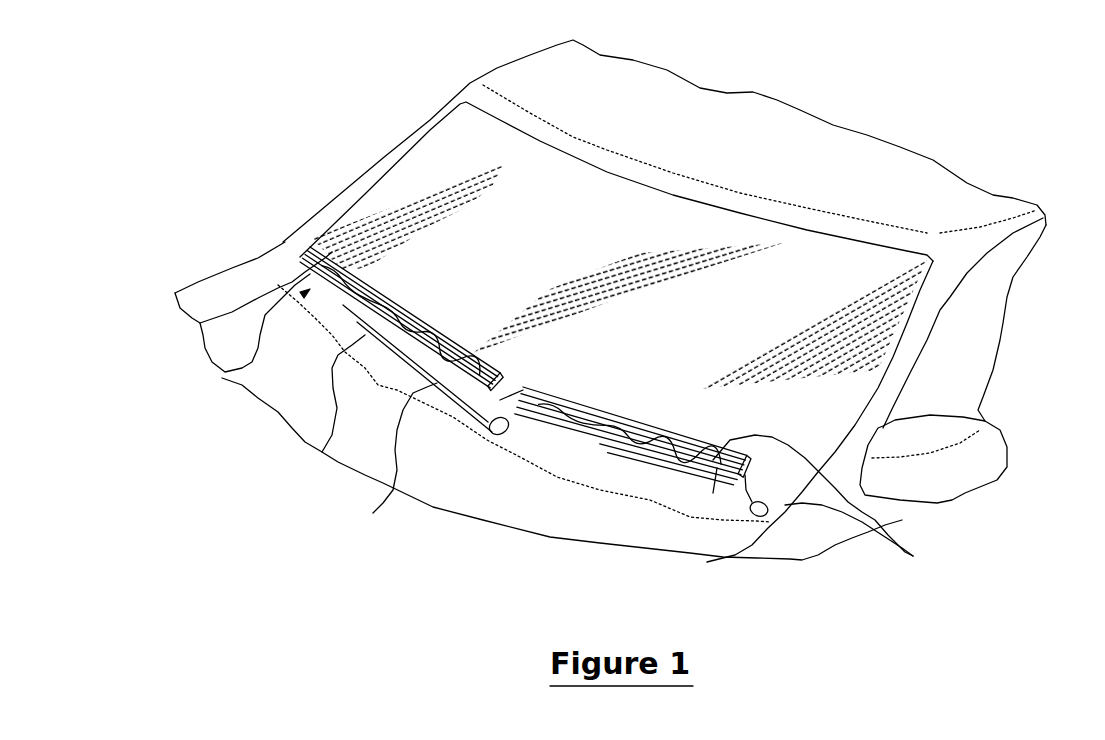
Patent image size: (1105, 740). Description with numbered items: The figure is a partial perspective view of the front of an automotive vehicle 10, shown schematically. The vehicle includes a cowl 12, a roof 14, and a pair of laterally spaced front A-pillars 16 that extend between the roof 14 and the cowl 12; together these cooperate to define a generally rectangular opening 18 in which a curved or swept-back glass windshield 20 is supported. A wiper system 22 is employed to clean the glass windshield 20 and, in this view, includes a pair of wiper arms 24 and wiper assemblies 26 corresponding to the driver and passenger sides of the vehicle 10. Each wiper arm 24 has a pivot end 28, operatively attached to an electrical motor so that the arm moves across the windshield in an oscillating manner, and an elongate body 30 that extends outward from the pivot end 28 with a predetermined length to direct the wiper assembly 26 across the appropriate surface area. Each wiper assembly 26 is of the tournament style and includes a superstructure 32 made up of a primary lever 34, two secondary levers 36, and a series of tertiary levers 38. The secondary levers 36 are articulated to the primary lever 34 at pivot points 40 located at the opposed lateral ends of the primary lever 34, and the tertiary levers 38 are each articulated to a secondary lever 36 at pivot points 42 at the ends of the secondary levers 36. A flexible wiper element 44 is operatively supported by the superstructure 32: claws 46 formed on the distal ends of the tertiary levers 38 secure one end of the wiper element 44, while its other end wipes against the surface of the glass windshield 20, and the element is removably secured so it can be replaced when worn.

The vehicle 10 is at (290, 96).
The cowl 12 is at (634, 395).
The roof 14 is at (664, 141).
The A-pillars 16 is at (719, 288).
The opening 18 is at (616, 159).
The glass windshield 20 is at (619, 200).
The wiper system 22 is at (245, 281).
The wiper arm 24 is at (524, 412).
The wiper assembly 26 is at (240, 331).
The pivot end 28 is at (468, 500).
The elongate body 30 is at (526, 451).
The superstructure 32 is at (385, 395).
The primary lever 34 is at (632, 487).
The secondary levers 36 is at (575, 495).
The tertiary levers 38 is at (391, 404).
The pivot points 40 is at (638, 500).
The pivot points 42 is at (654, 509).
The wiper element 44 is at (634, 336).
The claws 46 is at (514, 380).